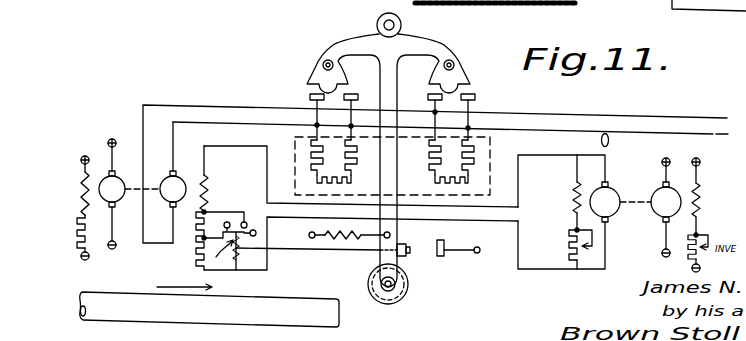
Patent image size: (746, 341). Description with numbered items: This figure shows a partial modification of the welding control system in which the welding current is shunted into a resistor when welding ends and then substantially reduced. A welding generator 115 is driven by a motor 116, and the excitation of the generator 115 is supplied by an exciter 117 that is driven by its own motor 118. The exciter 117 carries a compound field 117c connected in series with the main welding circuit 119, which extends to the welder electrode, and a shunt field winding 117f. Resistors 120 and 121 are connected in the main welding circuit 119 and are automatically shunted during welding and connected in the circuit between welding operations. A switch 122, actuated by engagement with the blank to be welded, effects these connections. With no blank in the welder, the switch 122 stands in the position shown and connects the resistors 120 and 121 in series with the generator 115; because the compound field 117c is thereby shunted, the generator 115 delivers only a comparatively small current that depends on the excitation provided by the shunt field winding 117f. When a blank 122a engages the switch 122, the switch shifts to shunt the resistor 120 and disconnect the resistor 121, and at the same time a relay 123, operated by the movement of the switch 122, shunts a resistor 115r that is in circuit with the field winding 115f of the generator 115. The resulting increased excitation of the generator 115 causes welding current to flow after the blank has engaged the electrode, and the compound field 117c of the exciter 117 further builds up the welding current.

The welding generator 115 is at (172, 186).
The field winding 115f is at (209, 186).
The resistor 115r is at (200, 228).
The motor 116 is at (113, 185).
The exciter 117 is at (609, 193).
The compound field 117c is at (609, 141).
The shunt field winding 117f is at (572, 204).
The motor 118 is at (657, 215).
The main welding circuit 119 is at (545, 121).
The resistor 120 is at (322, 152).
The resistor 121 is at (440, 157).
The switch 122 is at (393, 90).
The blank 122a is at (290, 294).
The relay 123 is at (236, 251).